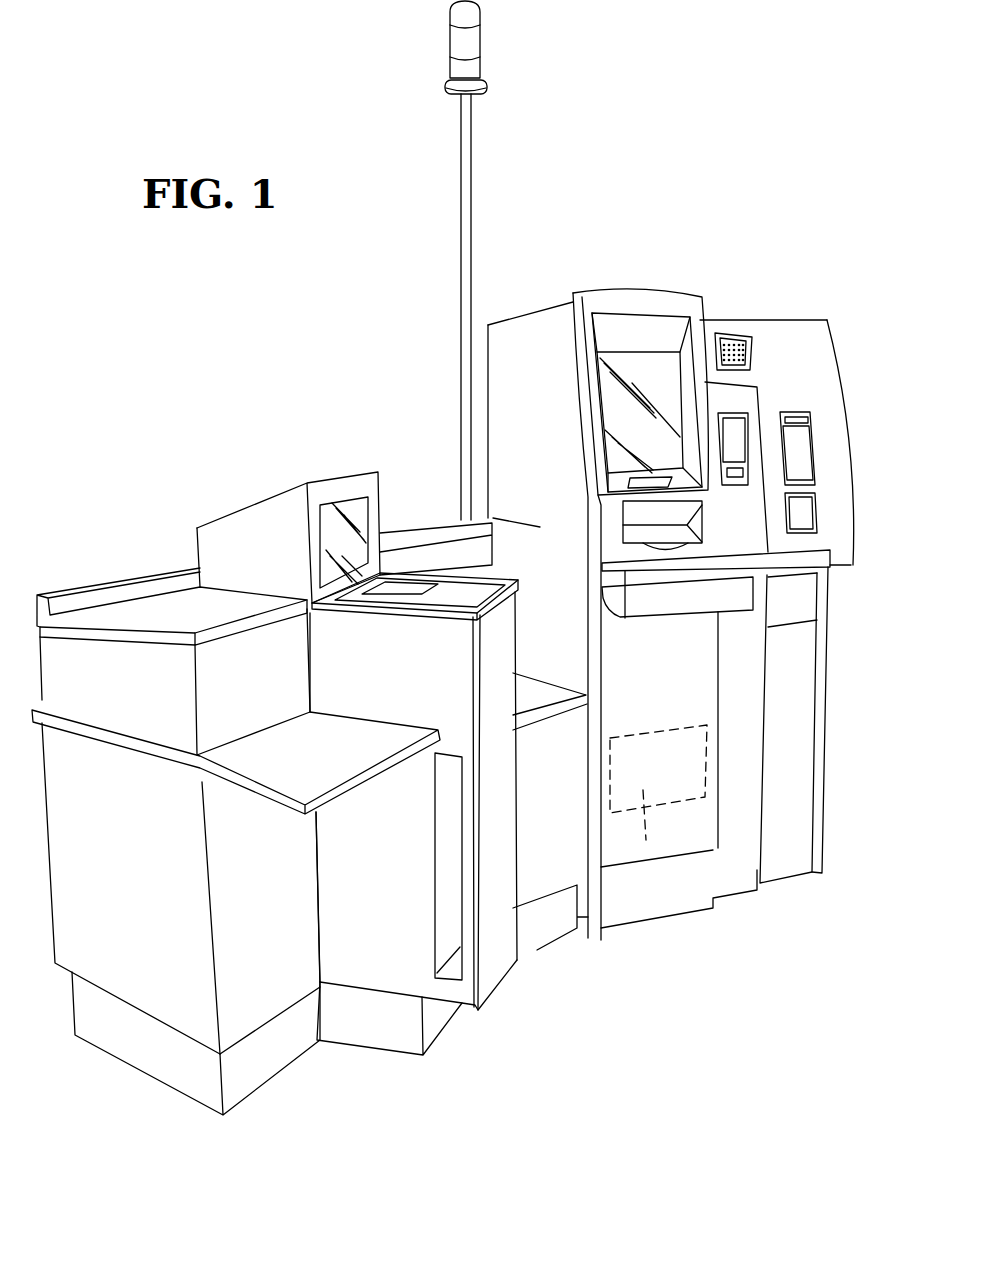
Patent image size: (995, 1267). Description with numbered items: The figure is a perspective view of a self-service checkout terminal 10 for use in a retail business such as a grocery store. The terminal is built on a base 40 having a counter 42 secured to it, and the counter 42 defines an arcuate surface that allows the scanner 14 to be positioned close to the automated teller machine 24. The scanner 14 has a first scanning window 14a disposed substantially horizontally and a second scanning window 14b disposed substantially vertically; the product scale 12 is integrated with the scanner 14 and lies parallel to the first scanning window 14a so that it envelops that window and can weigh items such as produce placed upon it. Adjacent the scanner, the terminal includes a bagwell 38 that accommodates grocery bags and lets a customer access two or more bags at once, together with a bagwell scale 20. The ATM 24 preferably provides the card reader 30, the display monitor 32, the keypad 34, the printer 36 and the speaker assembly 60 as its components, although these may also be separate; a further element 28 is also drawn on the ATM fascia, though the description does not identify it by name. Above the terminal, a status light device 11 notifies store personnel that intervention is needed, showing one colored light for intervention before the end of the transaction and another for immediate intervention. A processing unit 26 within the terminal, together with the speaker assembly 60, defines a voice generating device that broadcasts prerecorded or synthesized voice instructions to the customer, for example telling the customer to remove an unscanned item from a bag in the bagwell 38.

The self-service checkout terminal 10 is at (726, 122).
The status light device 11 is at (473, 42).
The product scale 12 is at (412, 814).
The scanner 14 is at (288, 514).
The first scanning window 14a is at (388, 586).
The second scanning window 14b is at (330, 563).
The bagwell scale 20 is at (570, 708).
The automated teller machine (ATM) 24 is at (802, 346).
The processing unit 26 is at (657, 788).
The receipt printer slot 28 is at (812, 515).
The card reader 30 is at (740, 430).
The display monitor 32 is at (620, 405).
The keypad 34 is at (627, 481).
The printer 36 is at (812, 453).
The bagwell 38 is at (555, 639).
The base 40 is at (133, 970).
The counter 42 is at (157, 607).
The speaker assembly 60 is at (733, 333).